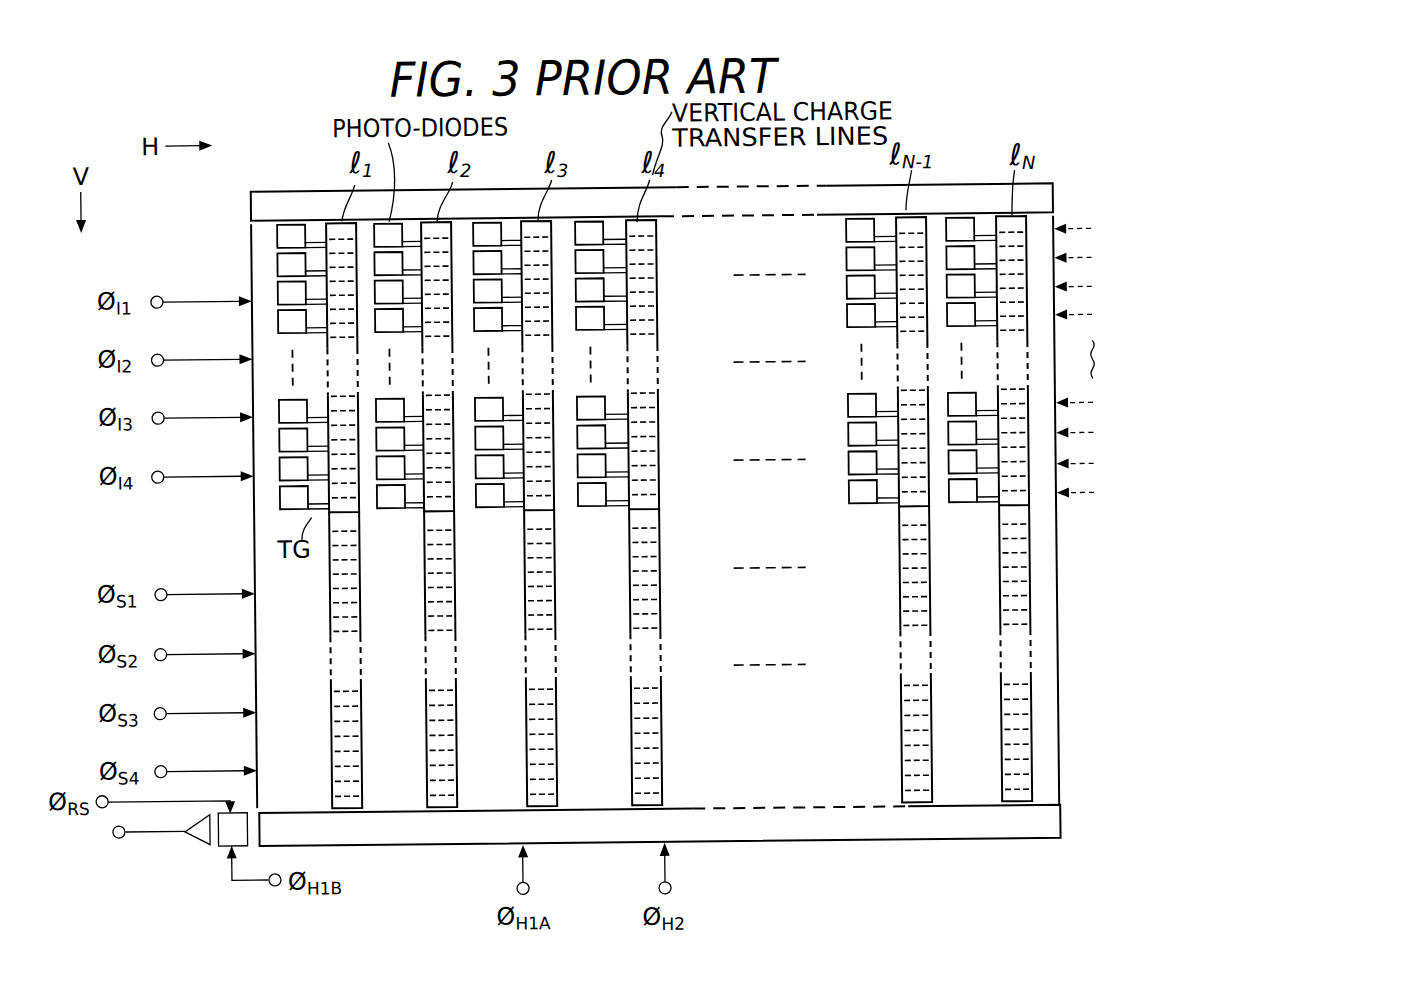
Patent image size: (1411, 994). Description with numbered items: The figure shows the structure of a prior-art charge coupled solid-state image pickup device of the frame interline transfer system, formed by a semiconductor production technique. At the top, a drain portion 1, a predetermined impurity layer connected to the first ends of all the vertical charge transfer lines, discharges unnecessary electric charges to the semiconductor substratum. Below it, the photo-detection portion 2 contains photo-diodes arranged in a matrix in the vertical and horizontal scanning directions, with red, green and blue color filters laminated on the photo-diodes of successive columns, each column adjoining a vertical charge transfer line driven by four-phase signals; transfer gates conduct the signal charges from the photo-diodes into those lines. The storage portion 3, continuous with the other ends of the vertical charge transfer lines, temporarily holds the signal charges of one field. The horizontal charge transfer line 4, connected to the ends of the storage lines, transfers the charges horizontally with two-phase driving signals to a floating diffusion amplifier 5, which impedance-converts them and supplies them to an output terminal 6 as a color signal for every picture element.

The drain portion 1 is at (1055, 197).
The photo-detection portion 2 is at (1127, 223).
The storage portion 3 is at (1127, 787).
The horizontal charge transfer line 4 is at (1050, 822).
The floating diffusion amplifier 5 is at (194, 835).
The output terminal 6 is at (114, 836).